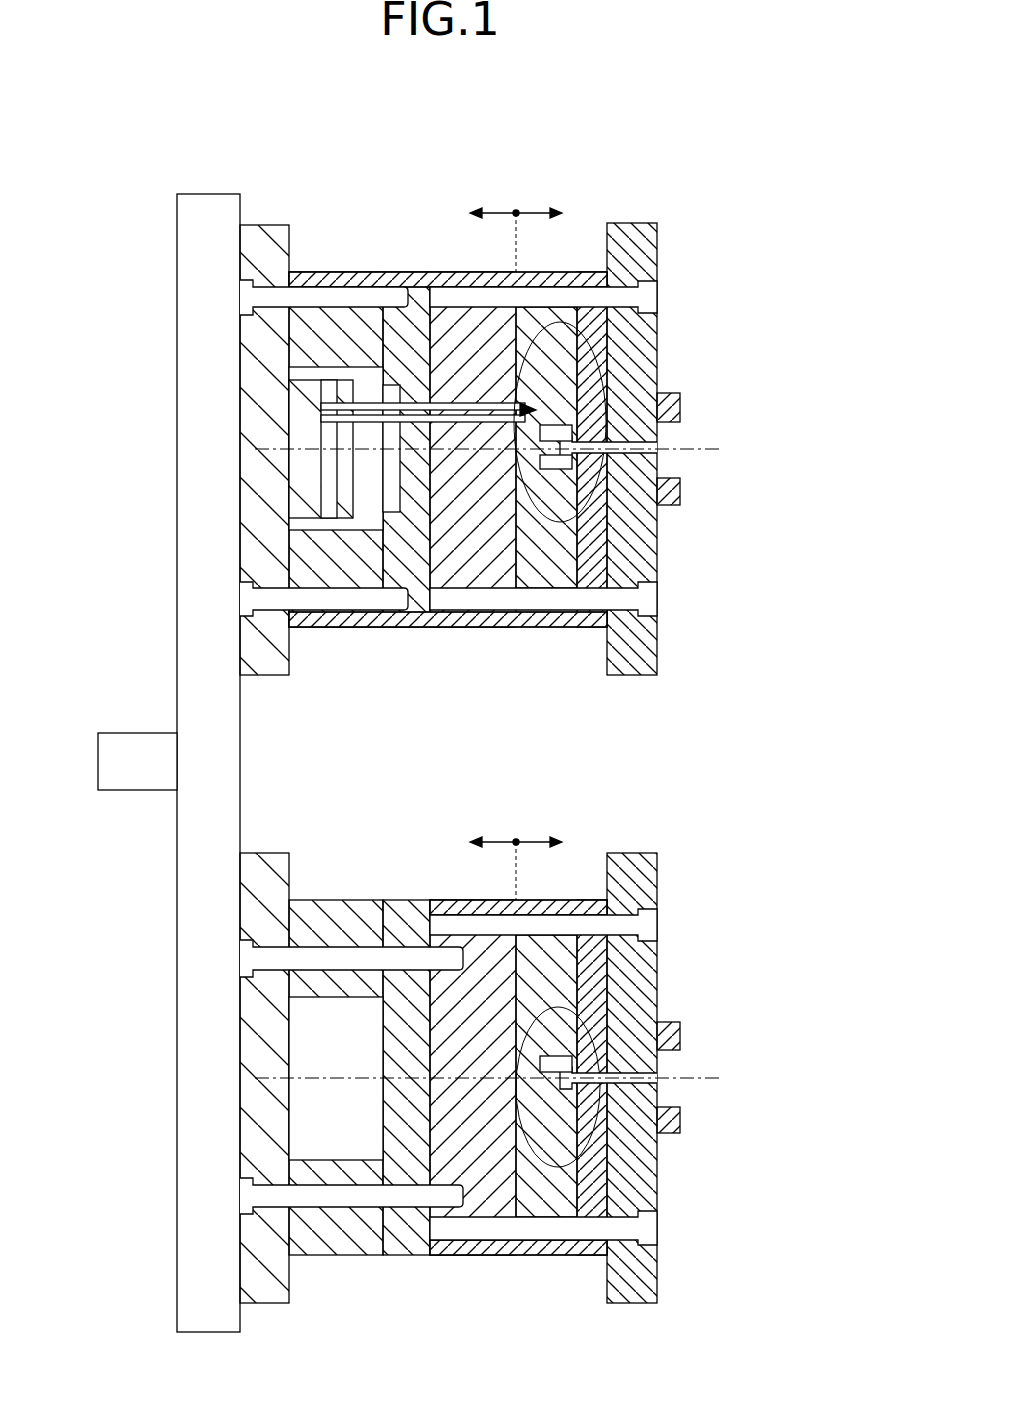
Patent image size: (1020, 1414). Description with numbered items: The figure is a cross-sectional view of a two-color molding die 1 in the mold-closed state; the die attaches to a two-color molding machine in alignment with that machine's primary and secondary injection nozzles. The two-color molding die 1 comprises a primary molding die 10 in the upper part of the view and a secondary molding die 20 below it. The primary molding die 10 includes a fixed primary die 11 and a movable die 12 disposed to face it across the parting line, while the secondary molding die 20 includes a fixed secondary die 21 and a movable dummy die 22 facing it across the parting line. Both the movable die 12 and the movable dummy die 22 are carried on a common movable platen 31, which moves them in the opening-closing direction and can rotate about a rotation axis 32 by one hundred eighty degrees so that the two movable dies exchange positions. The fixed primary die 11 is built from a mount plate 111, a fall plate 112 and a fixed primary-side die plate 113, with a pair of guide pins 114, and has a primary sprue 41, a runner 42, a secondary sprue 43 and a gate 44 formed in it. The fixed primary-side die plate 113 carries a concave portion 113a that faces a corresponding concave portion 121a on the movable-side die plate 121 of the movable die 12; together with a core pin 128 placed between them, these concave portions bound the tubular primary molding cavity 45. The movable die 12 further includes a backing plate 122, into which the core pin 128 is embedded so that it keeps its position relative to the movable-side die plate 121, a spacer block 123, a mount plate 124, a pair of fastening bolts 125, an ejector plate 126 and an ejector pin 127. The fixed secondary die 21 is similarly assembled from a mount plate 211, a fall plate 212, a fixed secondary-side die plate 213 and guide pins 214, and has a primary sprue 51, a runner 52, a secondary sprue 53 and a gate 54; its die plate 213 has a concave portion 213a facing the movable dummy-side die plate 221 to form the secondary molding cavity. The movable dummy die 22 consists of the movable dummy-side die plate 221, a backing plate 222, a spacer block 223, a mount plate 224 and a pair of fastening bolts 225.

The two-color molding die 1 is at (184, 156).
The primary molding die 10 is at (668, 232).
The fixed primary die 11 is at (657, 678).
The movable die 12 is at (518, 678).
The secondary molding die 20 is at (668, 857).
The fixed secondary die 21 is at (657, 1306).
The movable dummy die 22 is at (518, 1306).
The movable platen 31 is at (177, 516).
The rotation axis 32 is at (134, 733).
The primary sprue 41 is at (660, 447).
The runner 42 is at (681, 407).
The secondary sprue 43 is at (572, 450).
The gate 44 is at (590, 498).
The primary molding cavity 45 is at (575, 400).
The primary sprue 51 is at (660, 1079).
The runner 52 is at (681, 1120).
The secondary sprue 53 is at (575, 1068).
The gate 54 is at (590, 1012).
The mount plate 111 is at (628, 223).
The fall plate 112 is at (592, 272).
The fixed primary-side die plate 113 is at (551, 272).
The concave portion 113a is at (590, 342).
The guide pins 114 is at (660, 296).
The movable-side die plate 121 is at (445, 272).
The concave portion 121a is at (512, 400).
The backing plate 122 is at (410, 272).
The spacer block 123 is at (355, 272).
The mount plate 124 is at (278, 225).
The fastening bolts 125 is at (322, 287).
The ejector plate 126 is at (300, 385).
The ejector pin 127 is at (325, 409).
The core pin 128 is at (392, 450).
The mount plate 211 is at (628, 853).
The fall plate 212 is at (592, 900).
The fixed secondary-side die plate 213 is at (551, 900).
The concave portion 213a is at (585, 1140).
The guide pins 214 is at (660, 926).
The movable dummy-side die plate 221 is at (469, 900).
The backing plate 222 is at (410, 900).
The spacer block 223 is at (355, 900).
The mount plate 224 is at (278, 853).
The fastening bolts 225 is at (322, 947).